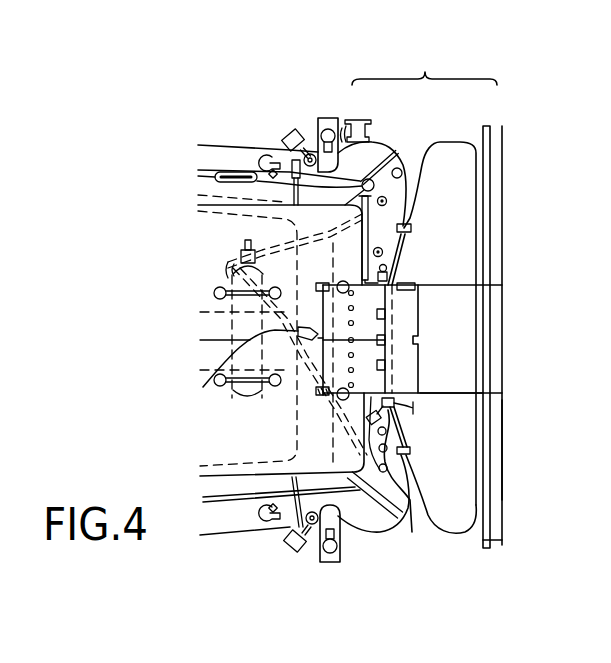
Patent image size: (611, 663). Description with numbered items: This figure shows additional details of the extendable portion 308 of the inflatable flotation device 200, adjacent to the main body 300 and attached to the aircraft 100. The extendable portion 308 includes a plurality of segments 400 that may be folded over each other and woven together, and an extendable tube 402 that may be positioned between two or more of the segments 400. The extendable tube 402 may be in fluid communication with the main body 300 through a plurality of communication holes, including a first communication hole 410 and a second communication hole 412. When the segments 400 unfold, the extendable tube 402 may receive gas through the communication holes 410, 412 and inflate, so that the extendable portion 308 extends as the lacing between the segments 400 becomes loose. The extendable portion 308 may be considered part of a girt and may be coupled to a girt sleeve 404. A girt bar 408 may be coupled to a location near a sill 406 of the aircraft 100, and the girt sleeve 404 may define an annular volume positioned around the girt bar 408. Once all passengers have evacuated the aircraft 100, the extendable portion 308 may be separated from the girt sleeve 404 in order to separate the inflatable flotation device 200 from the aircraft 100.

The aircraft 100 is at (582, 248).
The inflatable flotation device 200 is at (308, 84).
The main body 300 is at (212, 427).
The extendable portion 308 is at (424, 65).
The plurality of segments 400 is at (446, 180).
The extendable tube 402 is at (470, 509).
The girt sleeve 404 is at (497, 385).
The sill 406 is at (505, 448).
The girt bar 408 is at (491, 541).
The first communication hole 410 is at (396, 479).
The second communication hole 412 is at (404, 226).